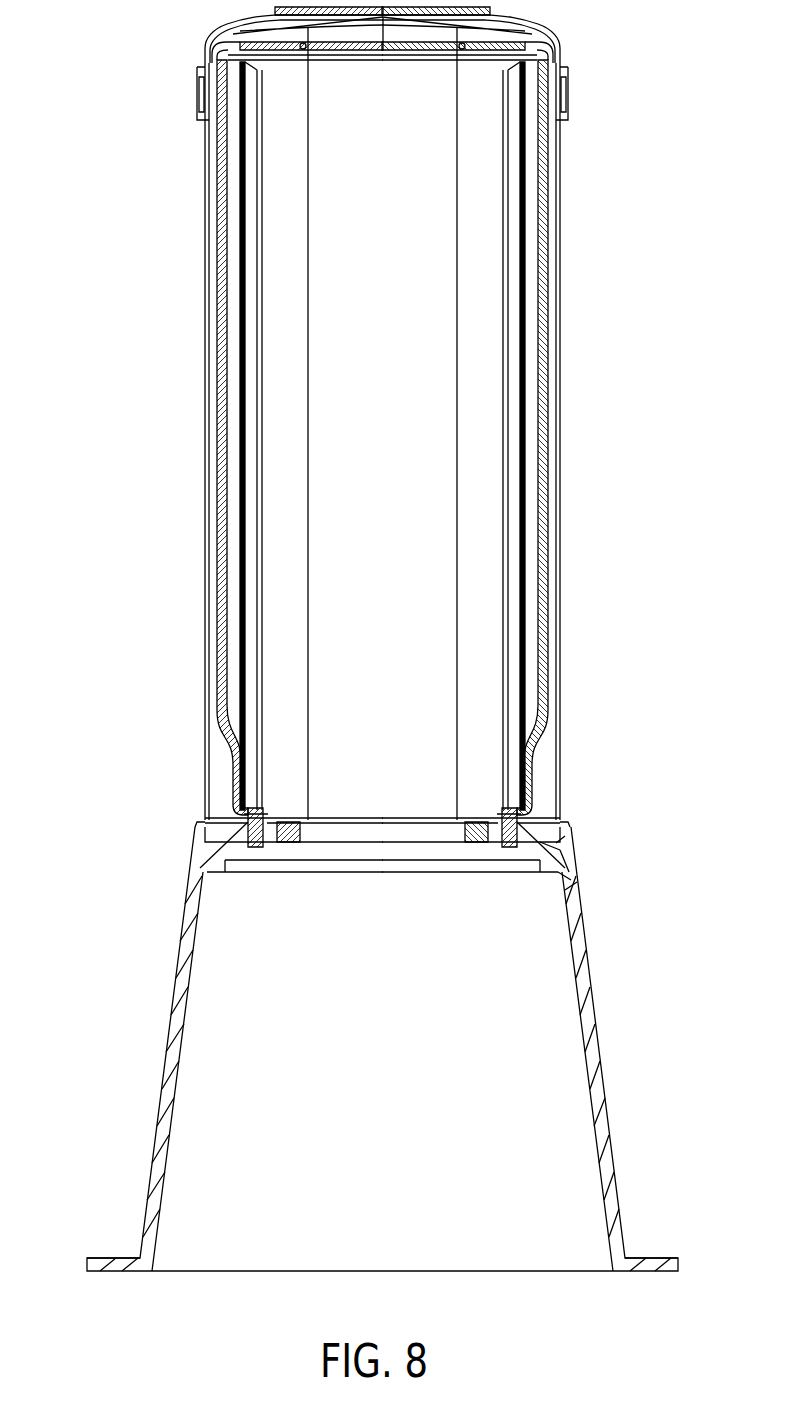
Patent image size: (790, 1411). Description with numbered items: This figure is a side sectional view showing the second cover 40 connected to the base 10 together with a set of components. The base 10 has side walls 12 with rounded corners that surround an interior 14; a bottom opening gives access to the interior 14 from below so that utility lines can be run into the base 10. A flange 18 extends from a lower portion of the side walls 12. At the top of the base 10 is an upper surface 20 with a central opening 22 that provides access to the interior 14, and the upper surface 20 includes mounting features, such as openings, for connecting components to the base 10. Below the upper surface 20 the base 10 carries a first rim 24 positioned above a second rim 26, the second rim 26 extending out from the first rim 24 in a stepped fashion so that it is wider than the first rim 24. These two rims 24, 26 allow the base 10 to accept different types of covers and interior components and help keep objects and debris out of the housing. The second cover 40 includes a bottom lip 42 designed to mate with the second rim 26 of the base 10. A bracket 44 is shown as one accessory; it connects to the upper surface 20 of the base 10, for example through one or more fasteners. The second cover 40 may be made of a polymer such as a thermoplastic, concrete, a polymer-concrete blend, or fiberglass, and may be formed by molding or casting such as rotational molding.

The base 10 is at (374, 1074).
The side walls 12 is at (160, 1138).
The interior 14 is at (576, 1197).
The flange 18 is at (93, 1264).
The upper surface 20 is at (247, 820).
The central opening 22 is at (337, 842).
The first rim 24 is at (556, 843).
The second rim 26 is at (570, 878).
The second cover 40 is at (406, 427).
The bottom lip 42 is at (568, 850).
The bracket 44 is at (220, 500).